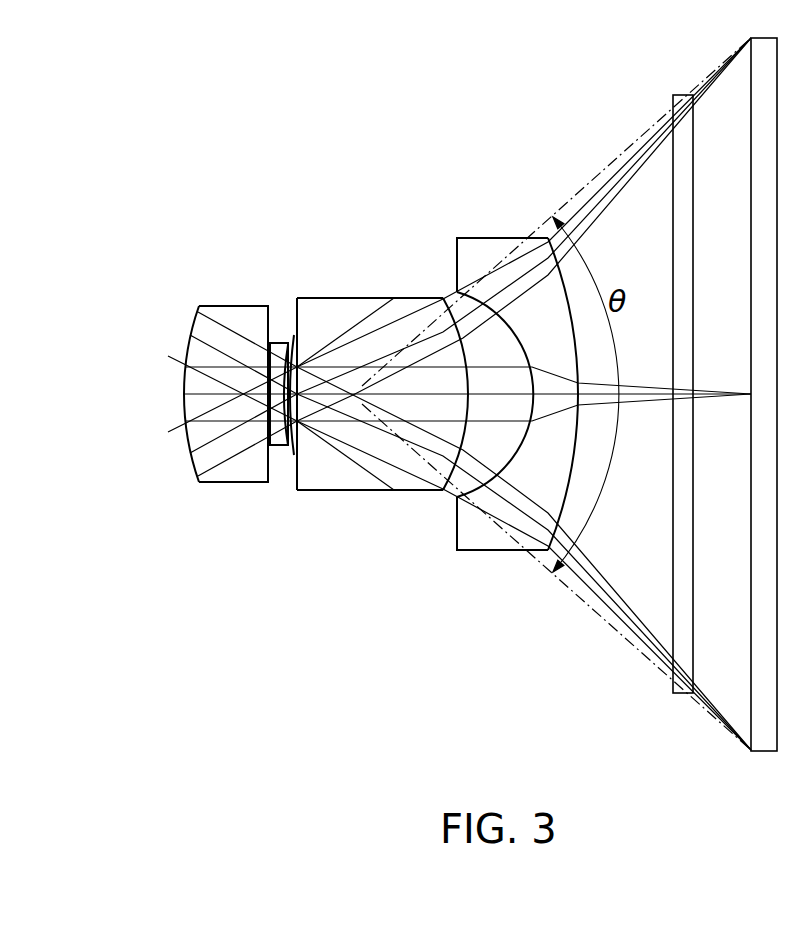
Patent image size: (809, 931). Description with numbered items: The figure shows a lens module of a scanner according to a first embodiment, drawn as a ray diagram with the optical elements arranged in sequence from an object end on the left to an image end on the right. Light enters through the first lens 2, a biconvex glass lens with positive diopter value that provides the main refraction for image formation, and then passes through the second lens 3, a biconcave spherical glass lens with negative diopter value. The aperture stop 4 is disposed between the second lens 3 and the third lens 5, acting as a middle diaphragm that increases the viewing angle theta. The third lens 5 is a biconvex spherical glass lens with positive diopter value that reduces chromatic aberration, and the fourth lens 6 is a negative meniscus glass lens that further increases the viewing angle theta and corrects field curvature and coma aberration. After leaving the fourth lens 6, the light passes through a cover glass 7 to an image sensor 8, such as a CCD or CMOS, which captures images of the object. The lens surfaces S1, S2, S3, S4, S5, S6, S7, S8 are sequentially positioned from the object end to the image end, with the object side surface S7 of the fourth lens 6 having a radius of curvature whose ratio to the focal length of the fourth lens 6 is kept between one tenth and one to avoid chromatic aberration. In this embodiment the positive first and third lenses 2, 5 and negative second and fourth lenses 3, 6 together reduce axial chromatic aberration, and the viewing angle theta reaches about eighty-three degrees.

The first lens 2 is at (167, 394).
The second lens 3 is at (279, 447).
The aperture stop 4 is at (300, 394).
The third lens 5 is at (382, 353).
The fourth lens 6 is at (501, 385).
The cover glass 7 is at (675, 695).
The image sensor 8 is at (763, 752).
The lens surface S1 is at (184, 356).
The lens surface S2 is at (268, 340).
The lens surface S3 is at (285, 355).
The lens surface S4 is at (294, 345).
The lens surface S5 is at (299, 335).
The lens surface S6 is at (447, 305).
The object side surface of the fourth lens S7 is at (475, 300).
The lens surface S8 is at (551, 255).